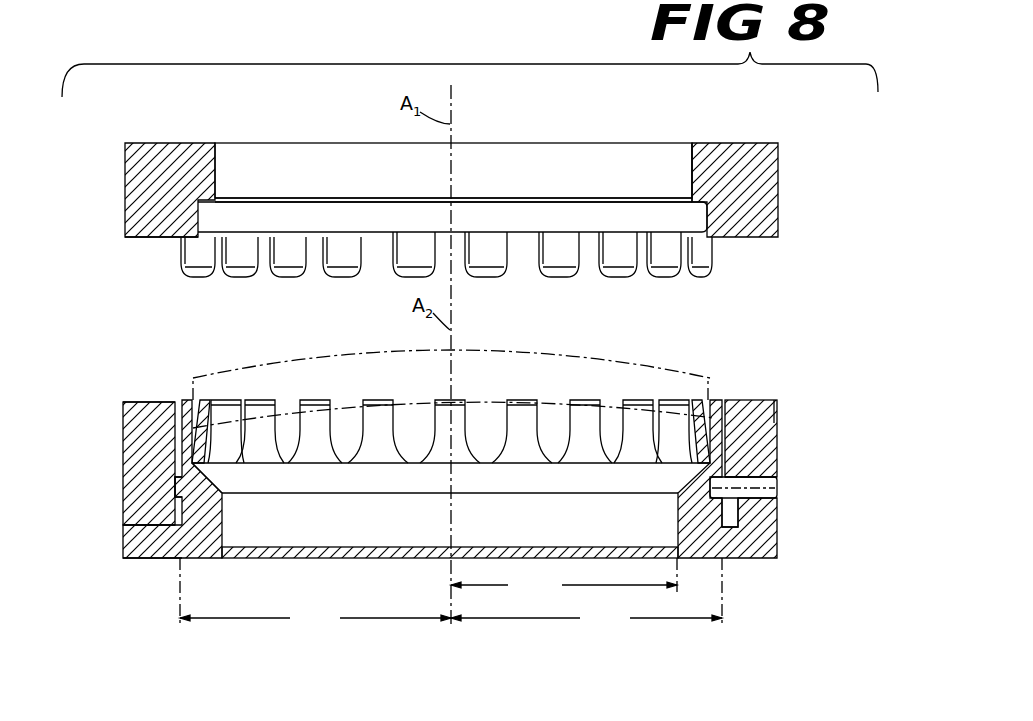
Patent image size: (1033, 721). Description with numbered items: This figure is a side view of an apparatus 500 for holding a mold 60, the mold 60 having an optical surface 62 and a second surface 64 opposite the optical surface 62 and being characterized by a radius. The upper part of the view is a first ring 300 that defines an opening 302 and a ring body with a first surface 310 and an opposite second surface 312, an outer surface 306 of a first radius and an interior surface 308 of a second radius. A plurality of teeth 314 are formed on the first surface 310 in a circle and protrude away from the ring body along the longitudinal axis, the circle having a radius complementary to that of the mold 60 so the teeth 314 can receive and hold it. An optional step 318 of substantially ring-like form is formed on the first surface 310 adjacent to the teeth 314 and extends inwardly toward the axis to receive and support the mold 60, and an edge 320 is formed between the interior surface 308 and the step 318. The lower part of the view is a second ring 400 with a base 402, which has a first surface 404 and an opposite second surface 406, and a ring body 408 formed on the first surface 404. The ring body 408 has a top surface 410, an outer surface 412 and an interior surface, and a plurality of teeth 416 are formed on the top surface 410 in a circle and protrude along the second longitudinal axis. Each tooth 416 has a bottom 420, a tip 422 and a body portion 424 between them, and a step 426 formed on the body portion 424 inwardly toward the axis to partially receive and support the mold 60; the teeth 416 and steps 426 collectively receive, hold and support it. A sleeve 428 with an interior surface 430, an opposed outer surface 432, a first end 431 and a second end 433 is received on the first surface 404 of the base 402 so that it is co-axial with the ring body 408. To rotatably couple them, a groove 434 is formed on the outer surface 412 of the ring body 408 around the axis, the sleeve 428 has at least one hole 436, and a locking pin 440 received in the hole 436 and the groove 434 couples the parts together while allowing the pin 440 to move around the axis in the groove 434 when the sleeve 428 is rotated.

The apparatus 500 is at (840, 205).
The first ring 300 is at (172, 112).
The opening 302 is at (499, 165).
The outer surface 306 is at (125, 185).
The interior surface 308 is at (690, 165).
The first surface 310 is at (133, 245).
The second surface 312 is at (748, 141).
The plurality of teeth 314 is at (188, 283).
The step 318 is at (655, 232).
The edge 320 is at (362, 208).
The second ring 400 is at (136, 328).
The base 402 is at (456, 506).
The first surface 404 is at (423, 546).
The second surface 406 is at (343, 562).
The ring body 408 is at (207, 556).
The top surface 410 is at (210, 452).
The outer surface 412 is at (185, 488).
The plurality of teeth 416 is at (206, 428).
The bottom 420 is at (487, 455).
The tip 422 is at (262, 400).
The body portion 424 is at (340, 415).
The step 426 is at (383, 405).
The sleeve 428 is at (120, 438).
The interior surface 430 is at (718, 400).
The first end 431 is at (152, 402).
The outer surface 432 is at (780, 427).
The second end 433 is at (130, 525).
The groove 434 is at (165, 560).
The hole 436 is at (763, 482).
The locking pin 440 is at (778, 477).
The mold 60 is at (451, 356).
The optical surface 62 is at (612, 420).
The second surface 64 is at (547, 355).